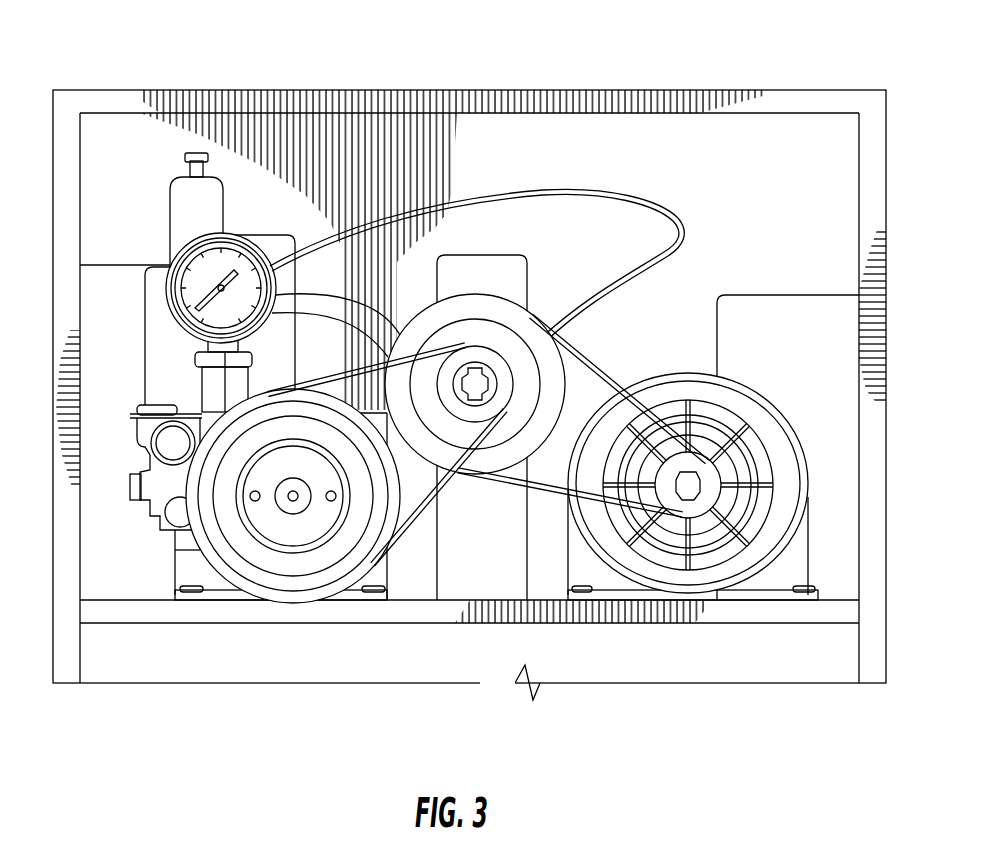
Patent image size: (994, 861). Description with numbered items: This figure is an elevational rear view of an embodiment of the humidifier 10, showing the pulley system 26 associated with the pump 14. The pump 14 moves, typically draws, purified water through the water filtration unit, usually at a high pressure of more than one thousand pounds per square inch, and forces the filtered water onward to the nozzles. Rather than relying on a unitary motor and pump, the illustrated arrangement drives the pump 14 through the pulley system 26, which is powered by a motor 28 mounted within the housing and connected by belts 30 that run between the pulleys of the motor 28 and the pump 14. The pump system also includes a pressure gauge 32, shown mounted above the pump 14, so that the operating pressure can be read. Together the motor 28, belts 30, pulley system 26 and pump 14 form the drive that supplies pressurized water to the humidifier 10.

The humidifier 10 is at (676, 86).
The pump 14 is at (147, 486).
The pulley system 26 is at (696, 470).
The motor 28 is at (652, 582).
The belts 30 is at (337, 380).
The pressure gauge 32 is at (232, 270).